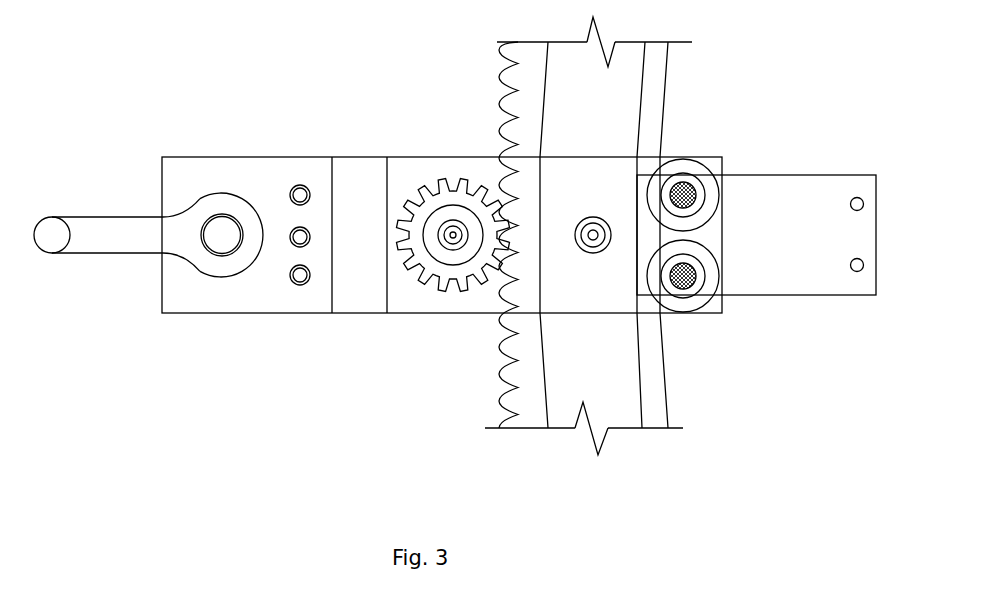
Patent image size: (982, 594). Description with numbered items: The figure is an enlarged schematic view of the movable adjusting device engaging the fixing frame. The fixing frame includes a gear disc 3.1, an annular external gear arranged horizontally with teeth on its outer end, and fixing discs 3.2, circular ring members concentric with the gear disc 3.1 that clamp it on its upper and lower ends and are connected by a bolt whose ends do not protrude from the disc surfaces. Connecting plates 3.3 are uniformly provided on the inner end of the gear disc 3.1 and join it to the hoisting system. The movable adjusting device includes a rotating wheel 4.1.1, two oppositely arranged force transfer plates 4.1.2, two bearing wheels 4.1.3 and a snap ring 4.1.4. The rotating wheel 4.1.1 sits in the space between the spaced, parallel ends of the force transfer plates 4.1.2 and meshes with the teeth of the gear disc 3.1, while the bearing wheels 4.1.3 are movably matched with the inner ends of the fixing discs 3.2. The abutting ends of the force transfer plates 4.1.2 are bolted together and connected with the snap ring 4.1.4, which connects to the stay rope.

The gear disc 3.1 is at (533, 377).
The fixing discs 3.2 is at (663, 123).
The connecting plates 3.3 is at (827, 293).
The rotating wheel 4.1.1 is at (433, 290).
The force transfer plates 4.1.2 is at (360, 155).
The bearing wheels 4.1.3 is at (693, 313).
The snap ring 4.1.4 is at (52, 235).